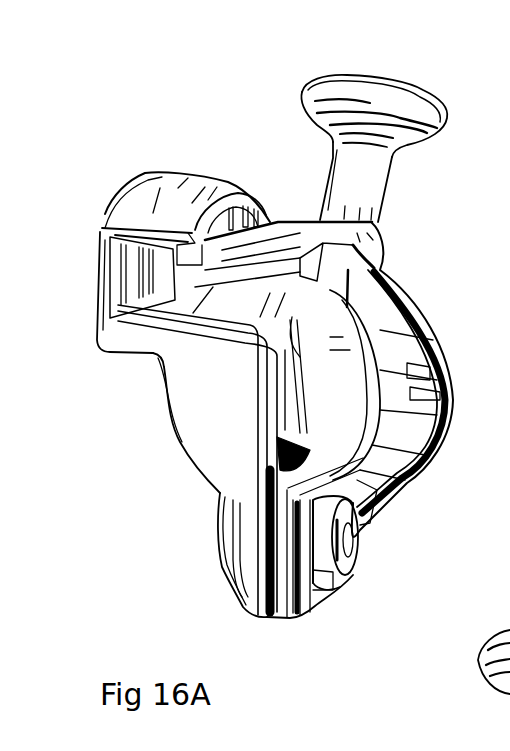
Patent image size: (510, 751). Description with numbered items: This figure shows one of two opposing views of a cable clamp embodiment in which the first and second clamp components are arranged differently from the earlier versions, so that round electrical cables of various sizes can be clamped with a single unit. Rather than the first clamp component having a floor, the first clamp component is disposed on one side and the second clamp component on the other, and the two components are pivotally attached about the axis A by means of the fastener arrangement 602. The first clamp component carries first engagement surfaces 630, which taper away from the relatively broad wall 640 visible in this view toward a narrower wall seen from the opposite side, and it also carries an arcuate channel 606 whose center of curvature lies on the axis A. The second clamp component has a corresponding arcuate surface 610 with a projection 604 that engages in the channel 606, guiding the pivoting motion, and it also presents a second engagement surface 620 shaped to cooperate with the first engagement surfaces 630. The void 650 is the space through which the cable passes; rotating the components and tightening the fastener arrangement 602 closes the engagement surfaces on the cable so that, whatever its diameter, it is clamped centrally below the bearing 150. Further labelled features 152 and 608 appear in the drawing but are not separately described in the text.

The bearing 150 is at (302, 93).
The knob stem 152 is at (387, 183).
The arcuate channel 606 is at (153, 190).
The arch opening 608 is at (187, 287).
The arcuate surface 610 is at (270, 253).
The projection 604 is at (167, 258).
The relatively broad wall 640 is at (203, 383).
The first engagement surfaces 630 is at (295, 385).
The second engagement surface 620 is at (370, 363).
The void 650 is at (330, 412).
The axis A is at (359, 545).
The fastener arrangement 602 is at (260, 575).